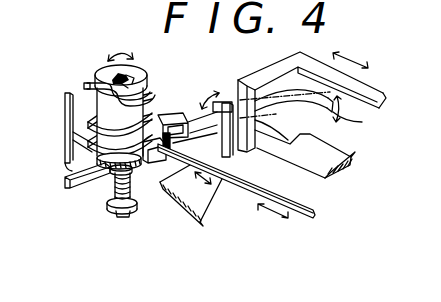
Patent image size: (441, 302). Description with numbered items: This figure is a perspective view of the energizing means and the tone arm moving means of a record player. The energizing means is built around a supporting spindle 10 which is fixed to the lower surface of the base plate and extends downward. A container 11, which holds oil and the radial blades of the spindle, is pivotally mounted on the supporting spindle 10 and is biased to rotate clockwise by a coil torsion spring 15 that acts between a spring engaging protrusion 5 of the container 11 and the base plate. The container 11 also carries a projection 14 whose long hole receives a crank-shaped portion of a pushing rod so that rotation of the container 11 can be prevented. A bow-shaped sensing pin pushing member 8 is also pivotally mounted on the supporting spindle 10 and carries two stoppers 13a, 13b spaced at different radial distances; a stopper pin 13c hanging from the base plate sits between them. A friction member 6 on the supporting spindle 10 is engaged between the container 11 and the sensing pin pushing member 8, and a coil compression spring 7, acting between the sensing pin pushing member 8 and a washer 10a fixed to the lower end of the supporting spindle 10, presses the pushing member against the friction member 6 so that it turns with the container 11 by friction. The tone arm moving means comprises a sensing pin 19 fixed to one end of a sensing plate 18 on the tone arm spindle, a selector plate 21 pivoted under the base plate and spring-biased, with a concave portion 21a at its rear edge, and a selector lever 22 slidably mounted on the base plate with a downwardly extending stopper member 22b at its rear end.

The spring engaging protrusion 5 is at (175, 192).
The friction member 6 is at (156, 172).
The coil compression spring 7 is at (134, 186).
The sensing pin pushing member 8 is at (345, 104).
The supporting spindle 10 is at (143, 74).
The washer 10a is at (109, 215).
The container 11 is at (162, 102).
The stopper 13a is at (80, 188).
The stopper 13b is at (74, 159).
The stopper pin 13c is at (65, 120).
The projection 14 is at (195, 108).
The coil torsion spring 15 is at (86, 84).
The sensing plate 18 is at (209, 200).
The sensing pin 19 is at (242, 165).
The selector plate 21 is at (350, 150).
The concave portion 21a is at (338, 126).
The selector lever 22 is at (384, 92).
The stopper member 22b is at (256, 130).